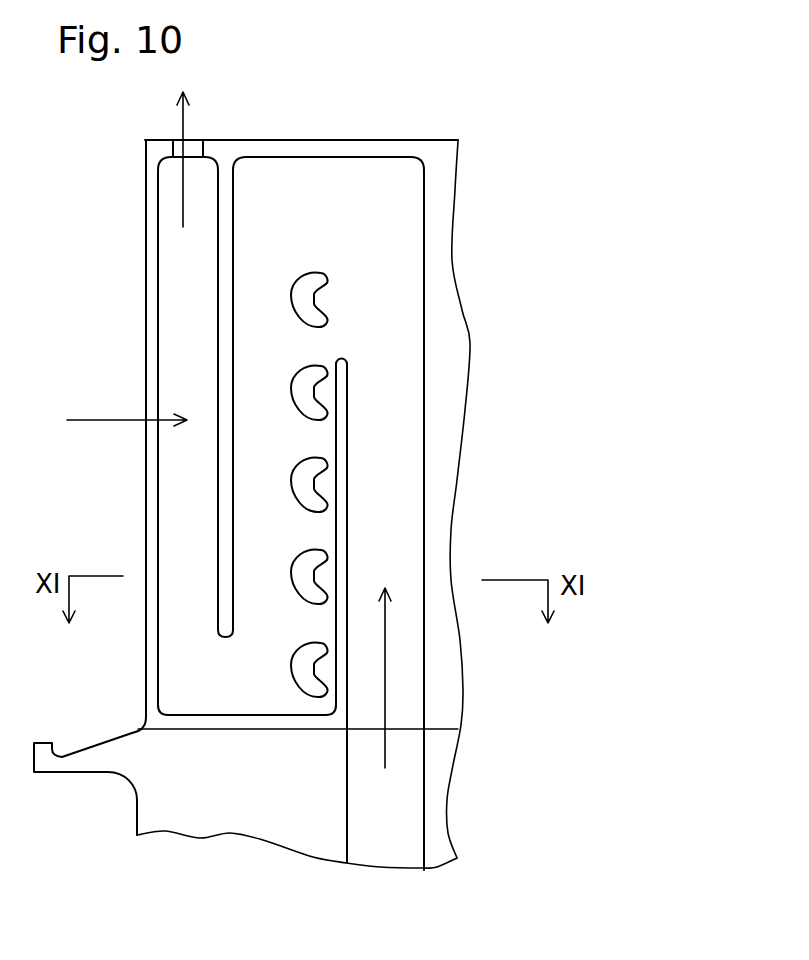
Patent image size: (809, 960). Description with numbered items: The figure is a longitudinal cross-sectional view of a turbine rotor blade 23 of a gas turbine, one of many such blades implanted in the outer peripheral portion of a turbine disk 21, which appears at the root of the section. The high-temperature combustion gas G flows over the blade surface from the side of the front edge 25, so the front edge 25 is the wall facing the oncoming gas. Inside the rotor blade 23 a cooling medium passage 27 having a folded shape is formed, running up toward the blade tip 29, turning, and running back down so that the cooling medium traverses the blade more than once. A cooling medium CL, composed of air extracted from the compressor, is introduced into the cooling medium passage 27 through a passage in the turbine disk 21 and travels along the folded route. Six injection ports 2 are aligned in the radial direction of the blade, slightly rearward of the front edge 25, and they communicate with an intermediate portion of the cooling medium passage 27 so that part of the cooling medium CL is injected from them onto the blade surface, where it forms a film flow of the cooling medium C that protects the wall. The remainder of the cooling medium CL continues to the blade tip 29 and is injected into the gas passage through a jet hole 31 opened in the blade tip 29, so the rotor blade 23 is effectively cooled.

The injection port 2 is at (293, 300).
The turbine disk 21 is at (90, 750).
The rotor blade 23 is at (455, 161).
The front edge 25 is at (147, 508).
The cooling medium passage 27 is at (397, 486).
The blade tip 29 is at (330, 141).
The jet hole 31 is at (192, 146).
The cooling medium C is at (183, 203).
The high-temperature gas G is at (120, 420).
The cooling medium CL is at (385, 655).